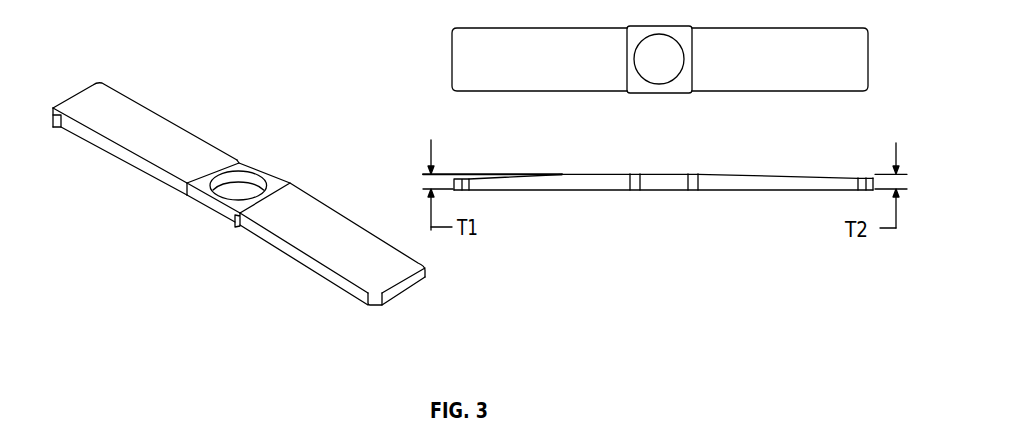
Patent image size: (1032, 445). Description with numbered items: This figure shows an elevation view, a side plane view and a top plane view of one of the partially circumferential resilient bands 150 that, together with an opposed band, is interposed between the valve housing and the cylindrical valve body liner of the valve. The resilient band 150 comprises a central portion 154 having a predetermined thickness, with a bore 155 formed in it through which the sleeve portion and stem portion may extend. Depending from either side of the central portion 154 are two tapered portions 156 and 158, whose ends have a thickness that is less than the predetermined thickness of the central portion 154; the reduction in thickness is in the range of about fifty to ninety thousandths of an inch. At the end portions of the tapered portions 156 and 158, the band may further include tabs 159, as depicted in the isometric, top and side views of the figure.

The resilient band 150 is at (278, 210).
The central portion 154 is at (205, 185).
The bore 155 is at (245, 187).
The tapered portion 156 is at (362, 255).
The tapered portion 158 is at (127, 123).
The tab 159 is at (428, 271).